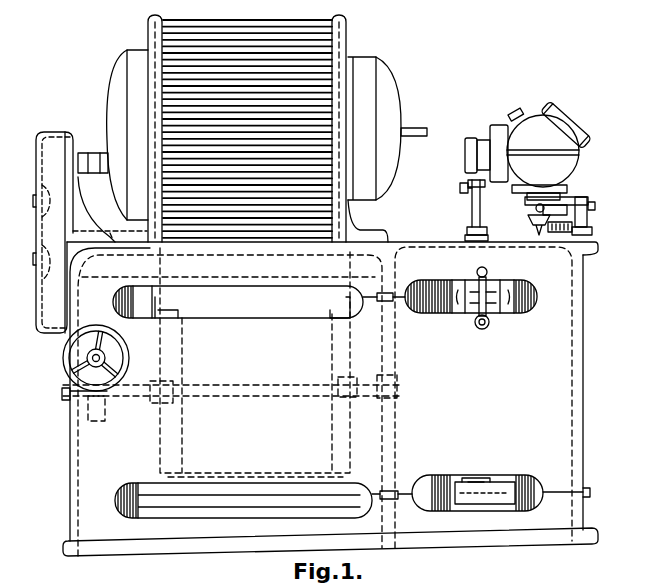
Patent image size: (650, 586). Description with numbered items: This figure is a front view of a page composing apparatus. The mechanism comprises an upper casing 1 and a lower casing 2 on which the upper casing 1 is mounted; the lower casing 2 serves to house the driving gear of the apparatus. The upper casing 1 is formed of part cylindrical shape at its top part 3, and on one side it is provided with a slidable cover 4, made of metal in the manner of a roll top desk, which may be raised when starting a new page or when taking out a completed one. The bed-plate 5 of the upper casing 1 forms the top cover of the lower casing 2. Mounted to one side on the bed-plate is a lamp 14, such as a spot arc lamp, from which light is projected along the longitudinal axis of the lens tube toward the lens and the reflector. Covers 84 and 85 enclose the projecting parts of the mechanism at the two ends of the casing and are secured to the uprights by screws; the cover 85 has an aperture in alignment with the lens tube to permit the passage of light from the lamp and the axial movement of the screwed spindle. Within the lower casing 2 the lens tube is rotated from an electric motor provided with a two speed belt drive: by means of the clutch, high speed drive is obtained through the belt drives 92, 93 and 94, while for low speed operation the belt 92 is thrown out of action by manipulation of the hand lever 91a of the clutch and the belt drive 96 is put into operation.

The upper casing 1 is at (257, 126).
The lower casing 2 is at (548, 332).
The top part 3 is at (292, 34).
The slidable cover 4 is at (298, 163).
The bed-plate 5 is at (363, 243).
The lamp 14 is at (547, 130).
The cover 84 is at (115, 98).
The cover 85 is at (387, 87).
The hand lever 91a is at (486, 270).
The belt drive 92 is at (440, 311).
The belt drive 93 is at (447, 480).
The belt drive 94 is at (116, 505).
The belt drive 96 is at (532, 292).